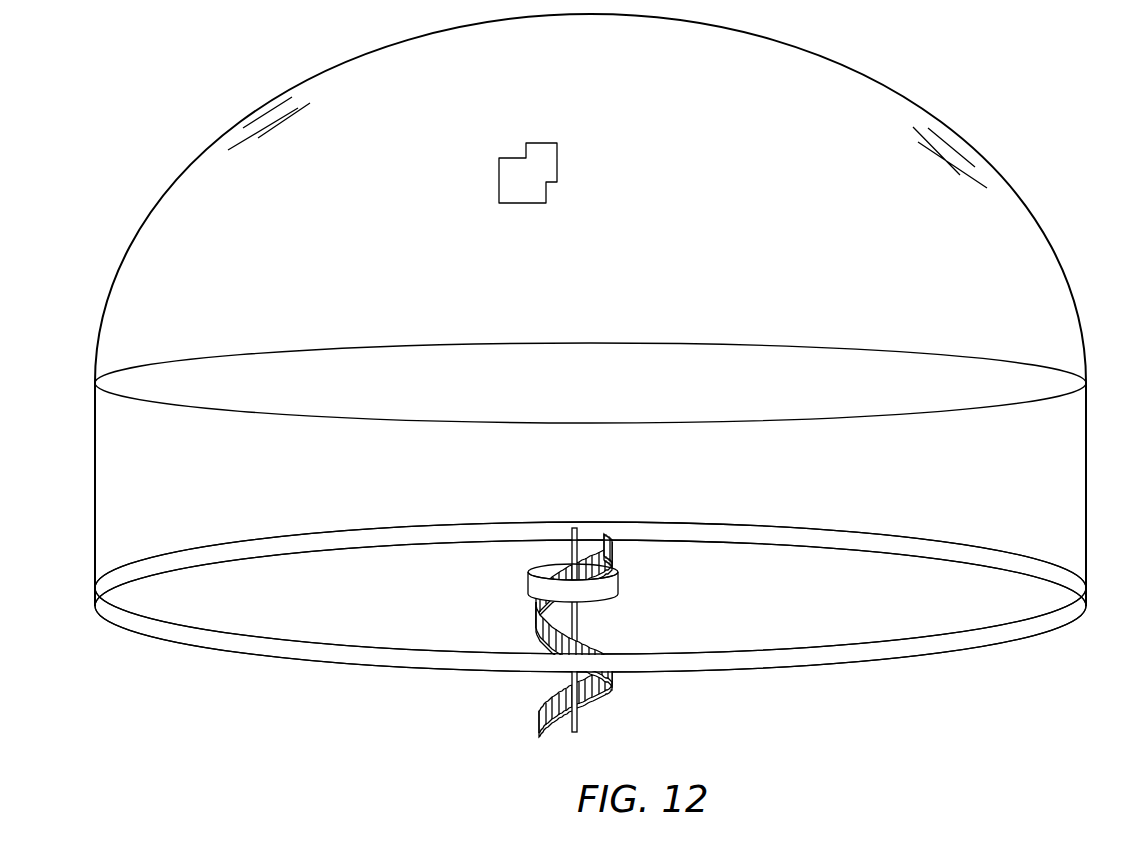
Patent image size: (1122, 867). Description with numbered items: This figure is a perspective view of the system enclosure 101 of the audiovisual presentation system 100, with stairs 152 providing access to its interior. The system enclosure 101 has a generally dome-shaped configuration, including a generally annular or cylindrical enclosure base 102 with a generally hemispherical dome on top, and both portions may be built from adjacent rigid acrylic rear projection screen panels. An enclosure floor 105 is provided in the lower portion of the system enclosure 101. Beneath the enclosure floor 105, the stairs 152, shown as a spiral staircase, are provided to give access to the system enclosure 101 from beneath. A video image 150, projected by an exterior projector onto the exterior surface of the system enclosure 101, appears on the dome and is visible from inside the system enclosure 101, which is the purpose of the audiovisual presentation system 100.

The audiovisual presentation system 100 is at (587, 375).
The system enclosure 101 is at (183, 155).
The enclosure base 102 is at (857, 667).
The enclosure floor 105 is at (807, 568).
The video image 150 is at (541, 167).
The stairs 152 is at (603, 630).